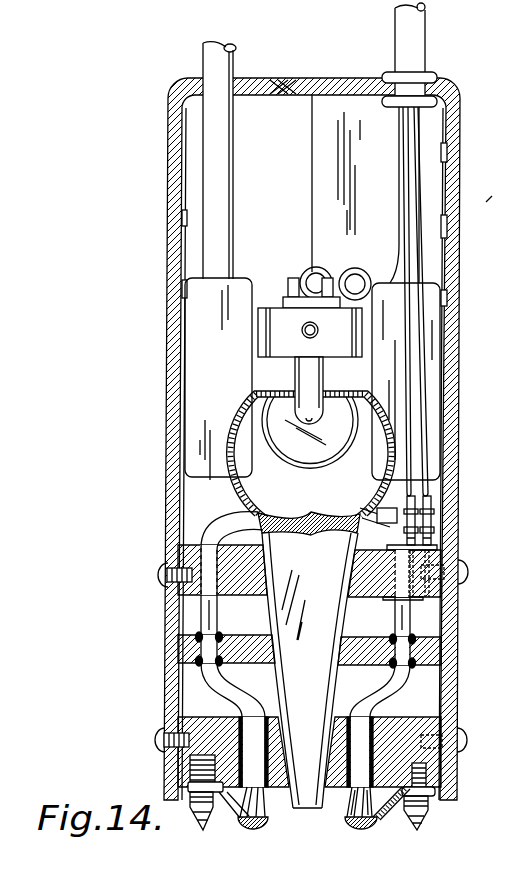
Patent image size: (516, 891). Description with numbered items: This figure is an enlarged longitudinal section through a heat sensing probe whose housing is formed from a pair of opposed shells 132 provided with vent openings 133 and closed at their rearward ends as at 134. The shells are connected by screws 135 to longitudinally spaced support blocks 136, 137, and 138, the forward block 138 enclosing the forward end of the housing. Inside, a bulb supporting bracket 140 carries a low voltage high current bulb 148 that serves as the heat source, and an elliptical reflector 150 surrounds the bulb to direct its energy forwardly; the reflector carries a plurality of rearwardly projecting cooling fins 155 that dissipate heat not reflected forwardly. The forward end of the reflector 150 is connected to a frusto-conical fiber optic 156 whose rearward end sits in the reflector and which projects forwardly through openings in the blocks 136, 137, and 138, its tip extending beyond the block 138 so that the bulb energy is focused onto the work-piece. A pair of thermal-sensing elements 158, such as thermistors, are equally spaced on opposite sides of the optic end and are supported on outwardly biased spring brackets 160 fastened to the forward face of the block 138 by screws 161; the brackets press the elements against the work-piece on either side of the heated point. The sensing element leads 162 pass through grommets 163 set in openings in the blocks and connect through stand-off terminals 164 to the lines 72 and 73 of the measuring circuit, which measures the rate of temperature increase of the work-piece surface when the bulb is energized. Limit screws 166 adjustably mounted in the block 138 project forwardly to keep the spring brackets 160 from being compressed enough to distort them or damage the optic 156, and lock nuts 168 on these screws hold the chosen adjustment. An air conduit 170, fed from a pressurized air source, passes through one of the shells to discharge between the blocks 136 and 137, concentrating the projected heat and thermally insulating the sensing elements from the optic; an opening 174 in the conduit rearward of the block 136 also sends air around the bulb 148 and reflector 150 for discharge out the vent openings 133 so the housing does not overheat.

The opposed shells 132 is at (463, 104).
The vent openings 133 is at (348, 77).
The closed rearward end 134 is at (261, 77).
The air conduit 170 is at (212, 66).
The line 72 is at (408, 400).
The line 73 is at (420, 432).
The opening 174 is at (501, 190).
The cooling fins 155 is at (196, 322).
The bulb supporting bracket 140 is at (274, 312).
The elliptical reflector 150 is at (246, 412).
The bulb 148 is at (316, 458).
The fiber optic 156 is at (318, 570).
The support block 136 is at (181, 548).
The support block 137 is at (174, 648).
The support block 138 is at (175, 700).
The sensing element leads 162 is at (232, 700).
The grommets 163 is at (226, 630).
The stand-off terminals 164 is at (434, 527).
The screws 135 is at (163, 573).
The lock nuts 168 is at (186, 790).
The screws 161 is at (432, 794).
The limit screws 166 is at (196, 823).
The spring brackets 160 is at (245, 828).
The thermal-sensing elements 158 is at (348, 826).